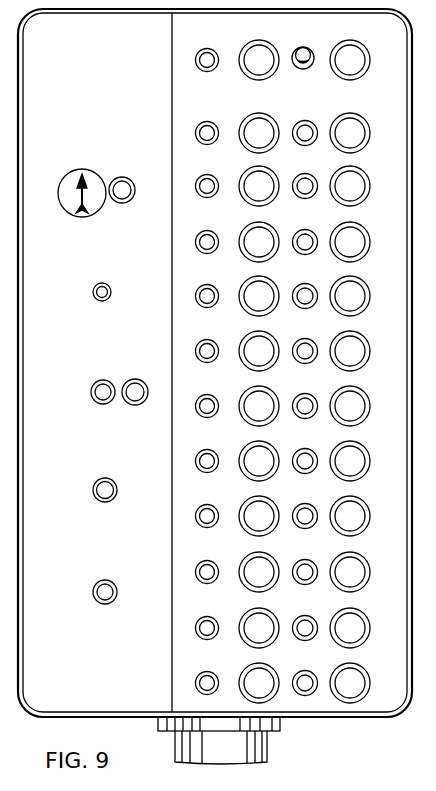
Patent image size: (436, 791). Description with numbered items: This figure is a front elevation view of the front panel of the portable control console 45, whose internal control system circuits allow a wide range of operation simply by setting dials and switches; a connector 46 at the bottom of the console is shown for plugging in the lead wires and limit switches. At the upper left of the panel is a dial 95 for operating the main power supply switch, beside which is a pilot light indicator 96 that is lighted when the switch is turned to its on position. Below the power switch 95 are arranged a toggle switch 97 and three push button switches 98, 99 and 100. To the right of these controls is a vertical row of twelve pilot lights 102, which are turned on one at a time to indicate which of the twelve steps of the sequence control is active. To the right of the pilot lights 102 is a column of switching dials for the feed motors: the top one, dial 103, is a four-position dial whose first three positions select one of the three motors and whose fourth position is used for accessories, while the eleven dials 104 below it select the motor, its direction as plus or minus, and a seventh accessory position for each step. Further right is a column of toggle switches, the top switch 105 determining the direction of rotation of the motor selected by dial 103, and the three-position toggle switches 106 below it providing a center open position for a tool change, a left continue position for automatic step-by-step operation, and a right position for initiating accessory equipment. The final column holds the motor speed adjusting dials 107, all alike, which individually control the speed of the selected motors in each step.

The console 45 is at (316, 717).
The electrical connector 46 is at (255, 748).
The dial 95 is at (76, 216).
The pilot light indicator 96 is at (125, 178).
The toggle switch 97 is at (95, 287).
The push button switch 98 is at (95, 384).
The push button switch 99 is at (98, 481).
The push button switch 100 is at (95, 585).
The pilot lights 102 is at (196, 67).
The dial 103 is at (255, 42).
The dials 104 is at (249, 402).
The toggle switch 105 is at (306, 50).
The toggle switches 106 is at (314, 122).
The motor speed adjusting dials 107 is at (366, 75).